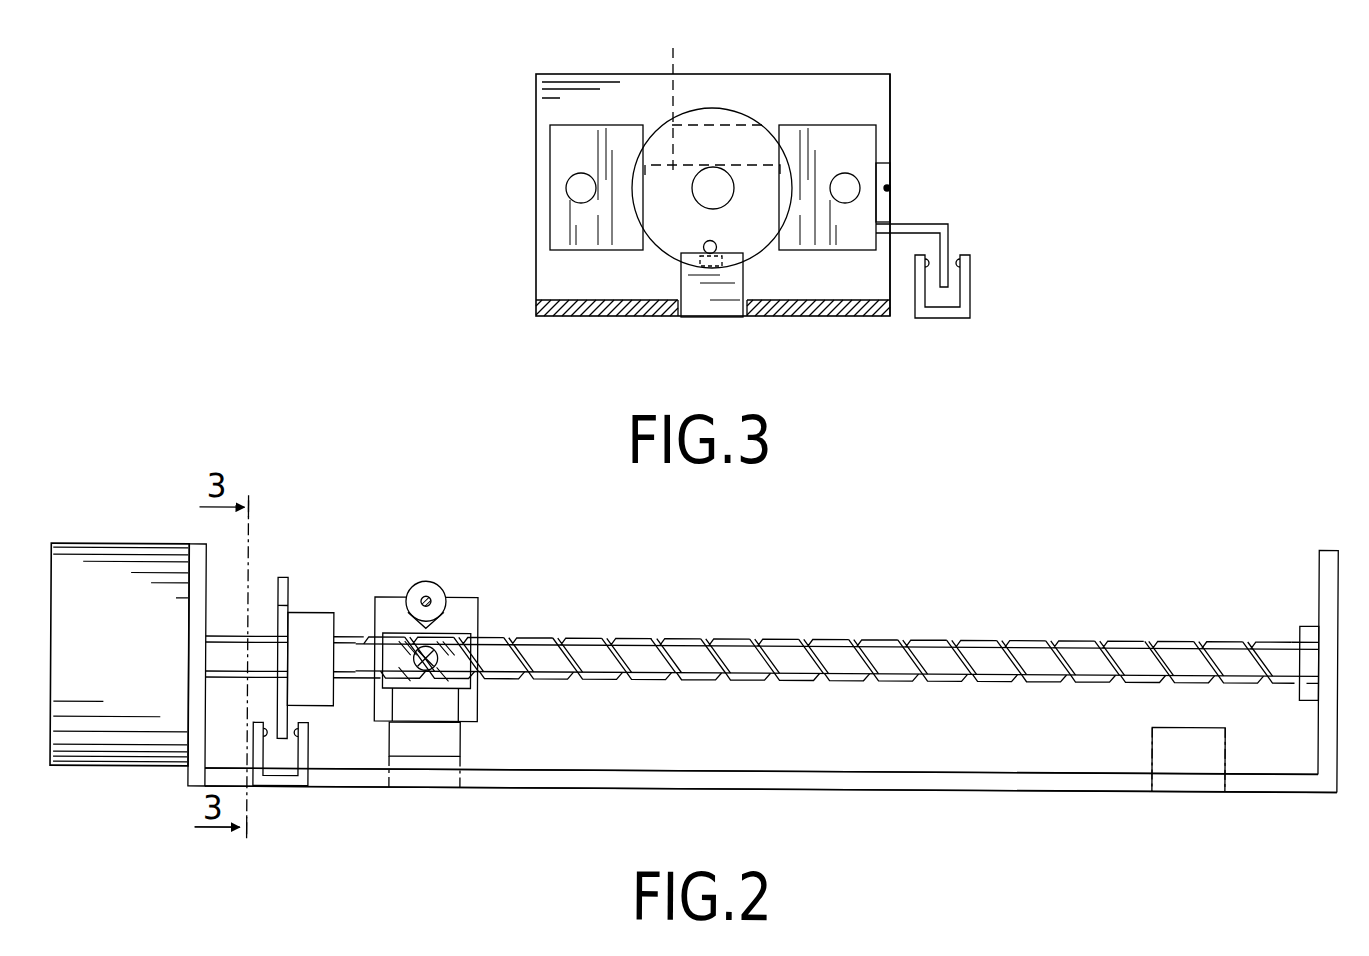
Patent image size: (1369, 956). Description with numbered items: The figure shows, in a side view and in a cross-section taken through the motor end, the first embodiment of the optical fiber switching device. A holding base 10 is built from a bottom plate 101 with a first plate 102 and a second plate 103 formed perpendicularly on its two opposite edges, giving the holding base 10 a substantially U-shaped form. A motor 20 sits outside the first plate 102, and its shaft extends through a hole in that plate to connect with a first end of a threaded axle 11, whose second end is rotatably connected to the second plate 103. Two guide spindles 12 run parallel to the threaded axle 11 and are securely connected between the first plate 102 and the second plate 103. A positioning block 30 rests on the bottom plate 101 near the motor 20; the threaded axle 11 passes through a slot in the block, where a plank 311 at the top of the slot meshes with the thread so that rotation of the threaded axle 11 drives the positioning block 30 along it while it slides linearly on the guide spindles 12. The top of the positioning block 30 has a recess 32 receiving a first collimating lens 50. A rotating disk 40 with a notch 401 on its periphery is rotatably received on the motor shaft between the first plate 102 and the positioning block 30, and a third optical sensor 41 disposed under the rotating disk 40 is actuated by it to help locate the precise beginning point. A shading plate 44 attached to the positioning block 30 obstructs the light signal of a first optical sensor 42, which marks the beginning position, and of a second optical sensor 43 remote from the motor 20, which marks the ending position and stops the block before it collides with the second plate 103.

In FIG. 3, the holding base 10 is at (878, 327).
In FIG. 2, the holding base 10 is at (920, 811).
In FIG. 3, the bottom plate 101 is at (813, 315).
In FIG. 2, the bottom plate 101 is at (948, 776).
In FIG. 2, the first plate 102 is at (197, 557).
In FIG. 3, the second plate 103 is at (883, 90).
In FIG. 2, the second plate 103 is at (1327, 551).
In FIG. 3, the threaded axle 11 is at (720, 178).
In FIG. 2, the threaded axle 11 is at (775, 639).
In FIG. 3, the guide spindles 12 is at (575, 188).
In FIG. 2, the guide spindles 12 is at (733, 650).
In FIG. 2, the motor 20 is at (117, 557).
In FIG. 3, the positioning block 30 is at (562, 143).
In FIG. 2, the positioning block 30 is at (465, 617).
In FIG. 3, the plank 311 is at (712, 95).
In FIG. 2, the recess 32 is at (410, 592).
In FIG. 3, the rotating disk 40 is at (718, 113).
In FIG. 2, the rotating disk 40 is at (313, 693).
In FIG. 3, the notch 401 is at (750, 240).
In FIG. 3, the third optical sensor 41 is at (740, 283).
In FIG. 2, the third optical sensor 41 is at (305, 747).
In FIG. 3, the first optical sensor 42 is at (967, 296).
In FIG. 2, the first optical sensor 42 is at (397, 763).
In FIG. 2, the second optical sensor 43 is at (1163, 750).
In FIG. 3, the shading plate 44 is at (928, 228).
In FIG. 2, the shading plate 44 is at (442, 741).
In FIG. 2, the first collimating lens 50 is at (425, 581).